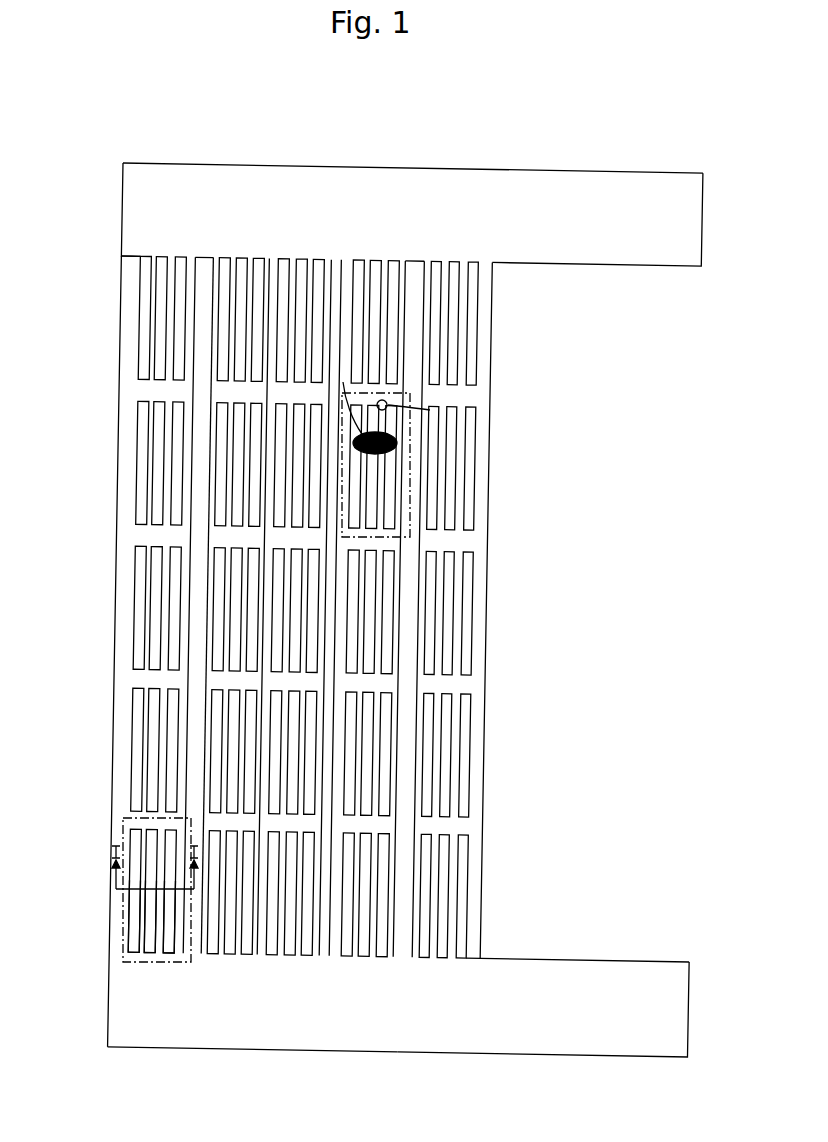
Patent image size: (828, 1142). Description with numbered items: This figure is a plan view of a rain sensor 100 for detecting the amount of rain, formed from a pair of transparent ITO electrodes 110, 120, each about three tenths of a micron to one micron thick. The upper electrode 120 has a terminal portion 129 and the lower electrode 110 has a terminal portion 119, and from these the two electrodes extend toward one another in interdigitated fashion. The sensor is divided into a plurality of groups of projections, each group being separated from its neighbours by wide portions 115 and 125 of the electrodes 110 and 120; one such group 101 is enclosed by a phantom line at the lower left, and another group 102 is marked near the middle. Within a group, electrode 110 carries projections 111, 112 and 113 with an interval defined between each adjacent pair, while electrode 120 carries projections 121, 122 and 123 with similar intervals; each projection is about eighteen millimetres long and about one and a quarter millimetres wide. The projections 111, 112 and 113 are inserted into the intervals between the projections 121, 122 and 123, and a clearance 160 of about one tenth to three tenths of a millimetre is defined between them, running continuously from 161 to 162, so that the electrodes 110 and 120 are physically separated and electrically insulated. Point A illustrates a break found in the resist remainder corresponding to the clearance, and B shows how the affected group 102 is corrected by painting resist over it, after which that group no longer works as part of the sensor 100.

The rain sensor 100 is at (102, 339).
The group of projections 101 is at (124, 962).
The group of projections 102 is at (410, 537).
The electrode 110 is at (276, 1048).
The projection 111 is at (178, 917).
The projection 112 is at (160, 925).
The projection 113 is at (140, 930).
The wide portion 115 is at (405, 600).
The terminal portion 119 is at (527, 1056).
The electrode 120 is at (493, 170).
The projection 121 is at (168, 827).
The projection 122 is at (150, 840).
The projection 123 is at (133, 843).
The wide portion 125 is at (340, 767).
The terminal portion 129 is at (222, 178).
The clearance 160 is at (272, 264).
The clearance start 161 is at (133, 258).
The clearance end 162 is at (468, 960).